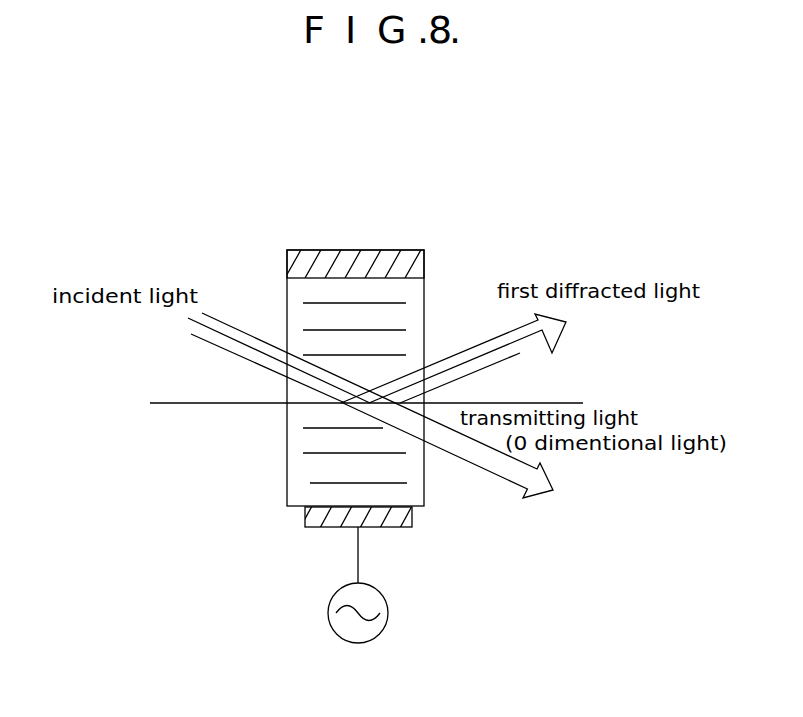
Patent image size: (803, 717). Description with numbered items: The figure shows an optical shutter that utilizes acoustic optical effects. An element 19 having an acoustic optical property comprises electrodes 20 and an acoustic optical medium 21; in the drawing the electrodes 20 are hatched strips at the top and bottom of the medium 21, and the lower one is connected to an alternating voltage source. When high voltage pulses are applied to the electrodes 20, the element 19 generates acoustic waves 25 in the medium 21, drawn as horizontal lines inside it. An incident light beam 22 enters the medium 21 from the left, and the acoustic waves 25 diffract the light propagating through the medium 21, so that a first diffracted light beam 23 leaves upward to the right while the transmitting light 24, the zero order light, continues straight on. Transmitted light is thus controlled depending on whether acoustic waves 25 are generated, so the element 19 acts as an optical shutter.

The element having an acoustic optical property 19 is at (370, 377).
The electrodes 20 is at (424, 262).
The acoustic optical medium 21 is at (424, 322).
The incident light 22 is at (243, 333).
The first diffracted light 23 is at (520, 355).
The transmitting light (zeroth order light) 24 is at (497, 475).
The acoustic waves 25 is at (310, 484).